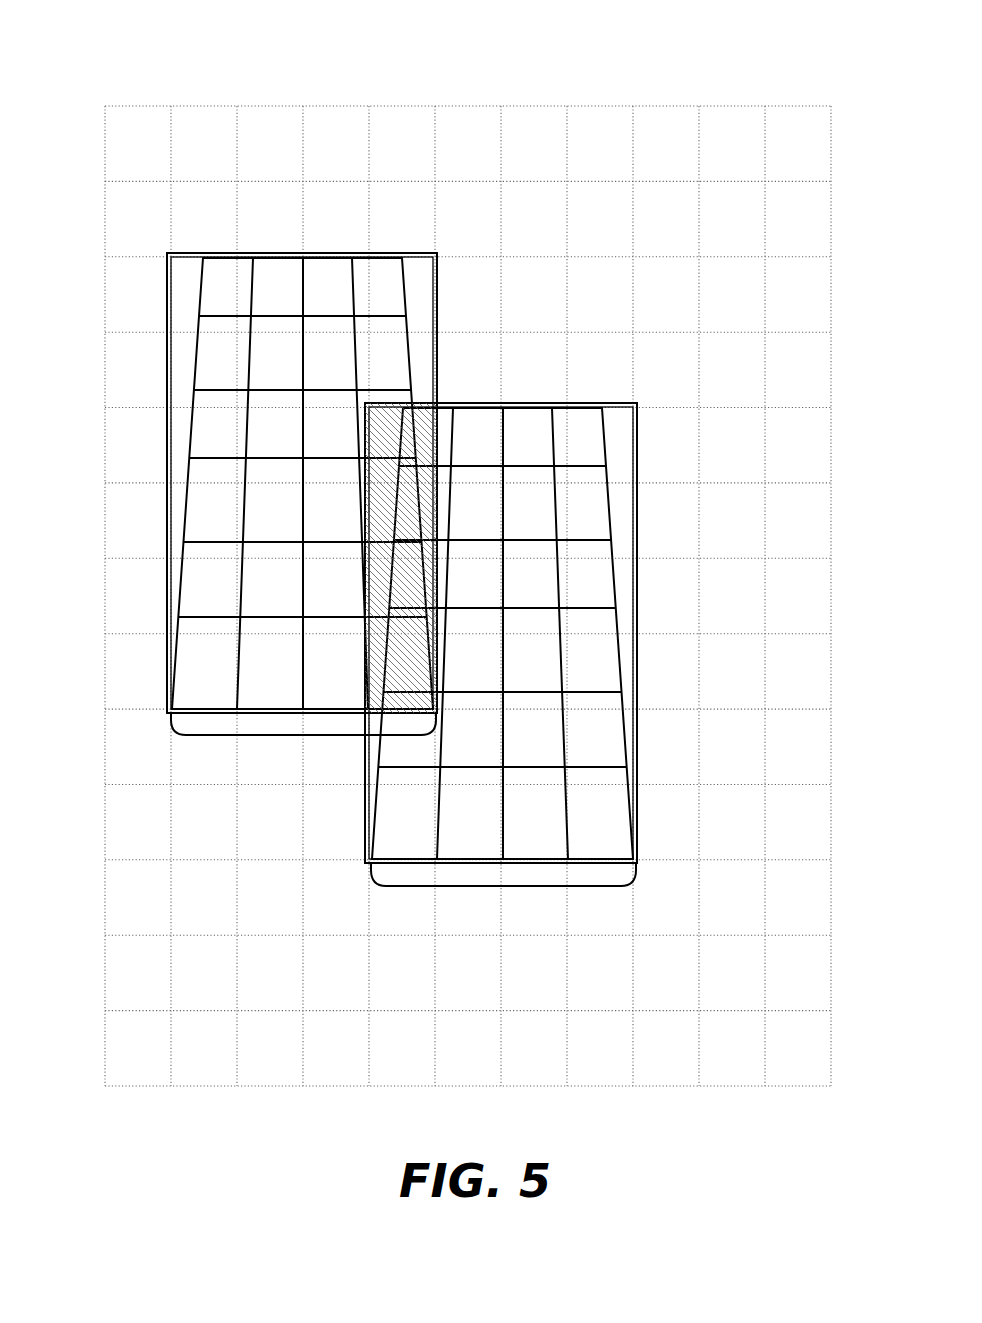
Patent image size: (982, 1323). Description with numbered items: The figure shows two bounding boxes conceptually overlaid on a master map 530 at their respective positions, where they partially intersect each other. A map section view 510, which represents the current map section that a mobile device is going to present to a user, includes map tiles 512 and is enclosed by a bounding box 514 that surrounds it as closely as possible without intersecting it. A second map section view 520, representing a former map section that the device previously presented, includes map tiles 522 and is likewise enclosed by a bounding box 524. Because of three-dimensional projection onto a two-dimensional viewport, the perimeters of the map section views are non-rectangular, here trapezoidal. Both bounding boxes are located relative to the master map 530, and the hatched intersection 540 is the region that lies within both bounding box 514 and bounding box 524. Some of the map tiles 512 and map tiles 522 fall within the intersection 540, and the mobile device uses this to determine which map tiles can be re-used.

The master map 530 is at (113, 90).
The bounding box 514 is at (418, 251).
The bounding box 524 is at (617, 401).
The map section view 510 is at (196, 290).
The map section view 520 is at (619, 514).
The intersection 540 is at (391, 598).
The map tiles 512 is at (304, 735).
The map tiles 522 is at (503, 886).